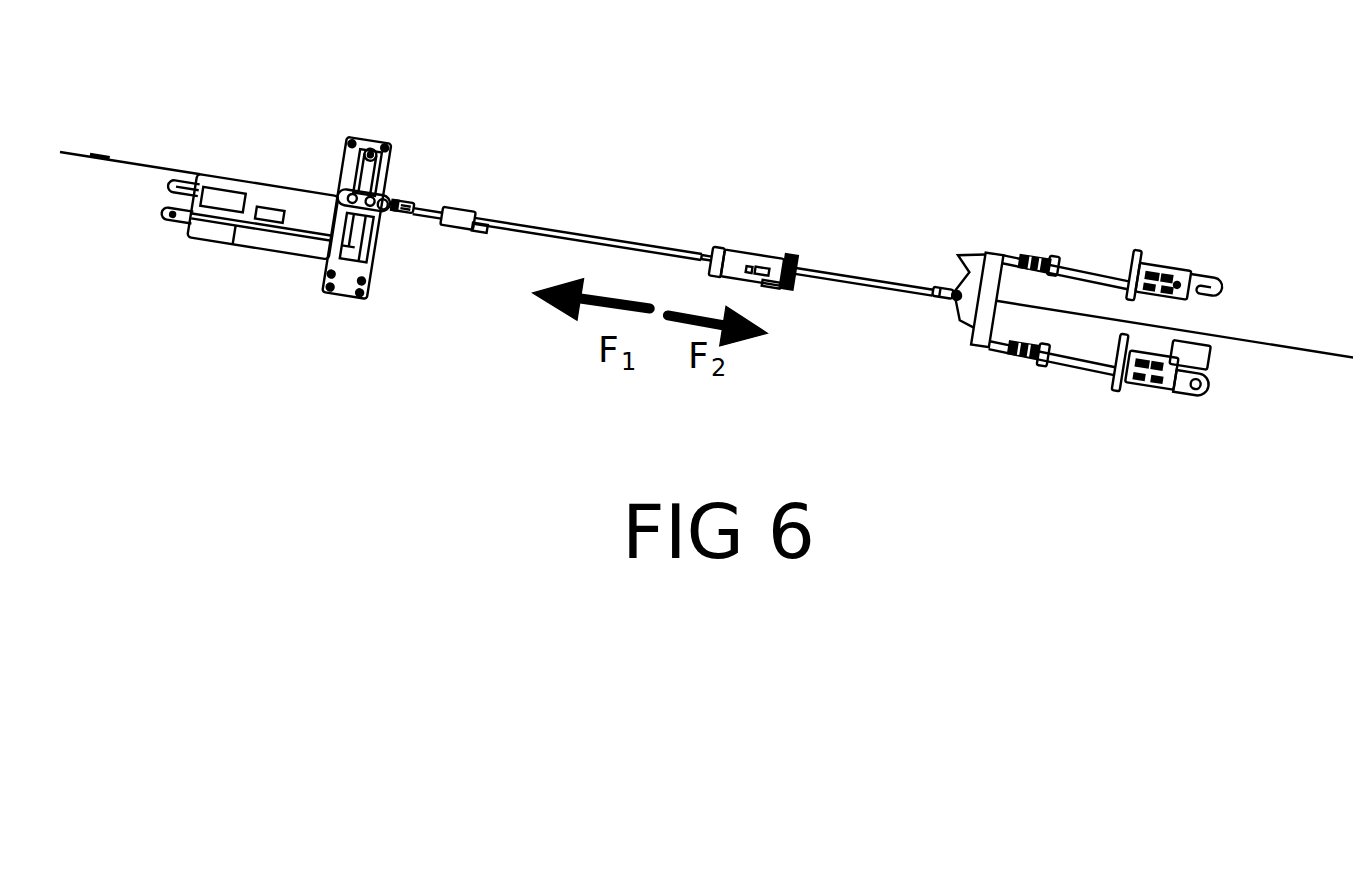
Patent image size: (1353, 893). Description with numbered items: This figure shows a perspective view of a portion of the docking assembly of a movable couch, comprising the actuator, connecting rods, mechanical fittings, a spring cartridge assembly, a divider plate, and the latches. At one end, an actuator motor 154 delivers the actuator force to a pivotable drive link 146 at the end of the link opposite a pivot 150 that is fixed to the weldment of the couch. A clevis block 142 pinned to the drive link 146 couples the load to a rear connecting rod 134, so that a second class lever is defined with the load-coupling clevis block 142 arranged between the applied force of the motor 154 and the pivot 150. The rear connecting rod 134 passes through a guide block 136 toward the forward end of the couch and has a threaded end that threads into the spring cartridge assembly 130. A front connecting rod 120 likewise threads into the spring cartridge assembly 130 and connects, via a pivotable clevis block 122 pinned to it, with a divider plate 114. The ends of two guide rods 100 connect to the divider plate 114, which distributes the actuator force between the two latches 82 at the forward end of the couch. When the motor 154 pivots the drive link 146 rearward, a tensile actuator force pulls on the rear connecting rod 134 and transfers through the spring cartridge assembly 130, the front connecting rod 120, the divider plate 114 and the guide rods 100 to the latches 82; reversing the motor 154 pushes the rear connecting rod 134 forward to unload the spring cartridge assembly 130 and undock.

The latches 82 is at (1213, 263).
The guide rod 100 is at (1097, 272).
The divider plate 114 is at (976, 270).
The front connecting rod 120 is at (857, 282).
The pivotable clevis block 122 is at (933, 305).
The spring cartridge assembly 130 is at (757, 245).
The rear connecting rod 134 is at (590, 232).
The guide block 136 is at (463, 207).
The clevis block 142 is at (405, 204).
The pivotable drive link 146 is at (353, 173).
The pivot 150 is at (373, 140).
The actuator motor 154 is at (270, 240).